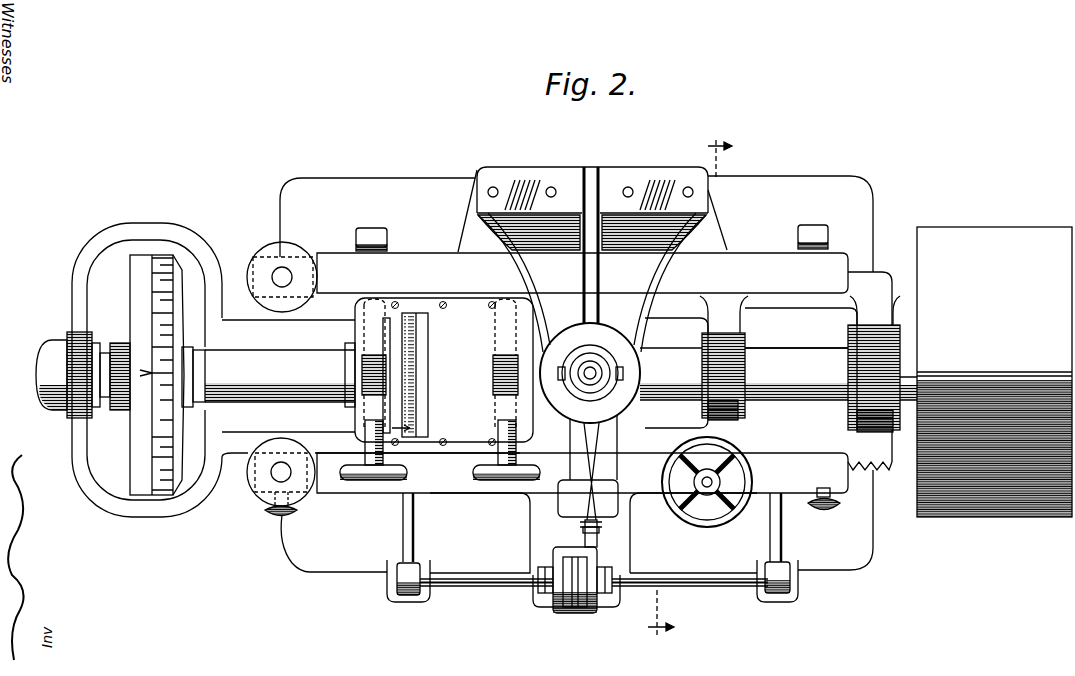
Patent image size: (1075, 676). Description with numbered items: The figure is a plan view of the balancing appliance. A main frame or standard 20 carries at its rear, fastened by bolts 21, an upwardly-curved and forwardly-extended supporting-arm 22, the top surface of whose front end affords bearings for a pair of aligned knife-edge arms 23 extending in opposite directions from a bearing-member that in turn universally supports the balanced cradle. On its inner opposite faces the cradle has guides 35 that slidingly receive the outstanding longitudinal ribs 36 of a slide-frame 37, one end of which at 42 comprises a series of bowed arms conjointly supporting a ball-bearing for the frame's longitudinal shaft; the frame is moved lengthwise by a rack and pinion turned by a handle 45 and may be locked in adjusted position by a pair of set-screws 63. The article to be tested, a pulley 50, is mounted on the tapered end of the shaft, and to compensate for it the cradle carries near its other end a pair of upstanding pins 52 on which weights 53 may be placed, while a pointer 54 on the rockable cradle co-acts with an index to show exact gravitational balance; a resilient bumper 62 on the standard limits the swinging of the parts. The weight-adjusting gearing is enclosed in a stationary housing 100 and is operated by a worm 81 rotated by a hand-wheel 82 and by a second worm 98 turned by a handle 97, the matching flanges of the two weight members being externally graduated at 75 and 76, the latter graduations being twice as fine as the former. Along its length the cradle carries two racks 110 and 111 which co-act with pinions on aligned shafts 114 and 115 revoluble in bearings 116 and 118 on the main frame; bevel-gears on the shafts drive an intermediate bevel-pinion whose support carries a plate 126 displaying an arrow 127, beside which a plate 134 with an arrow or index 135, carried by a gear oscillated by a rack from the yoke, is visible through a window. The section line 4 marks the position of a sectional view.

The section line 4- 4 is at (690, 393).
The main frame or standard 20 is at (728, 247).
The bolts 21 is at (684, 186).
The supporting-arm 22 is at (592, 259).
The knife-edge arms 23 is at (620, 370).
The guides 35 is at (582, 373).
The longitudinal ribs 36 is at (878, 468).
The slide-frame 37 is at (778, 374).
The bowed arms 42 is at (110, 497).
The handle 45 is at (712, 526).
The pulley 50 is at (993, 237).
The upstanding pins 52 is at (276, 478).
The weights 53 is at (263, 440).
The pointer 54 is at (597, 468).
The resilient bumper 62 is at (828, 243).
The set-screws 63 is at (838, 505).
The graduations 75 is at (140, 255).
The graduations 76 is at (162, 262).
The worm 81 is at (360, 390).
The hand-wheel 82 is at (358, 482).
The handle 97 is at (493, 482).
The worm 98 is at (495, 362).
The stationary housing 100 is at (444, 372).
The rack 110 is at (402, 537).
The rack 111 is at (782, 545).
The shaft 114 is at (468, 590).
The shaft 115 is at (726, 590).
The bearing 116 is at (395, 585).
The bearing 118 is at (796, 597).
The plate 126 is at (558, 612).
The arrow 127 is at (560, 562).
The plate 134 is at (586, 613).
The arrow or index 135 is at (598, 565).